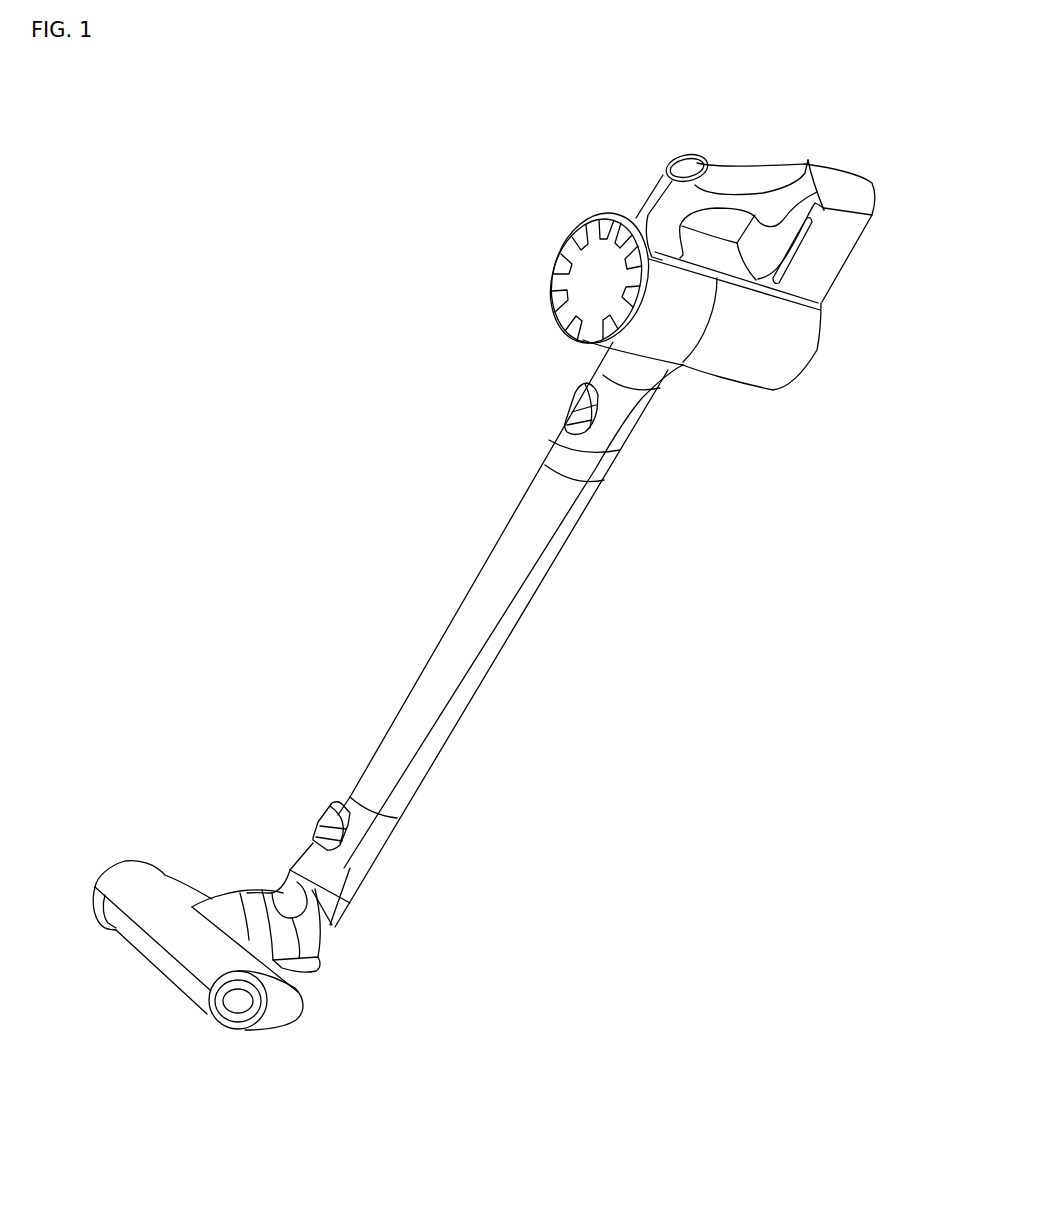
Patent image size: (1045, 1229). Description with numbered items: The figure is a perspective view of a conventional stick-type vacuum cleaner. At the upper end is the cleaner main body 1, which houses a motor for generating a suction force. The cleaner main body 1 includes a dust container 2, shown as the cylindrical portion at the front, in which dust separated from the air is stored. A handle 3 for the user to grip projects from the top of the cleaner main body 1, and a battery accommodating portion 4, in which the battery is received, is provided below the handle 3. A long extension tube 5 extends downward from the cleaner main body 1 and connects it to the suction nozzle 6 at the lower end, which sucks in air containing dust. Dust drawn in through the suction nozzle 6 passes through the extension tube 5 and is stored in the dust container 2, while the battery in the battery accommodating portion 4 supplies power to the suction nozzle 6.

The cleaner main body 1 is at (653, 325).
The dust container 2 is at (782, 347).
The handle 3 is at (748, 182).
The battery accommodating portion 4 is at (830, 250).
The extension tube 5 is at (440, 660).
The suction nozzle 6 is at (132, 860).